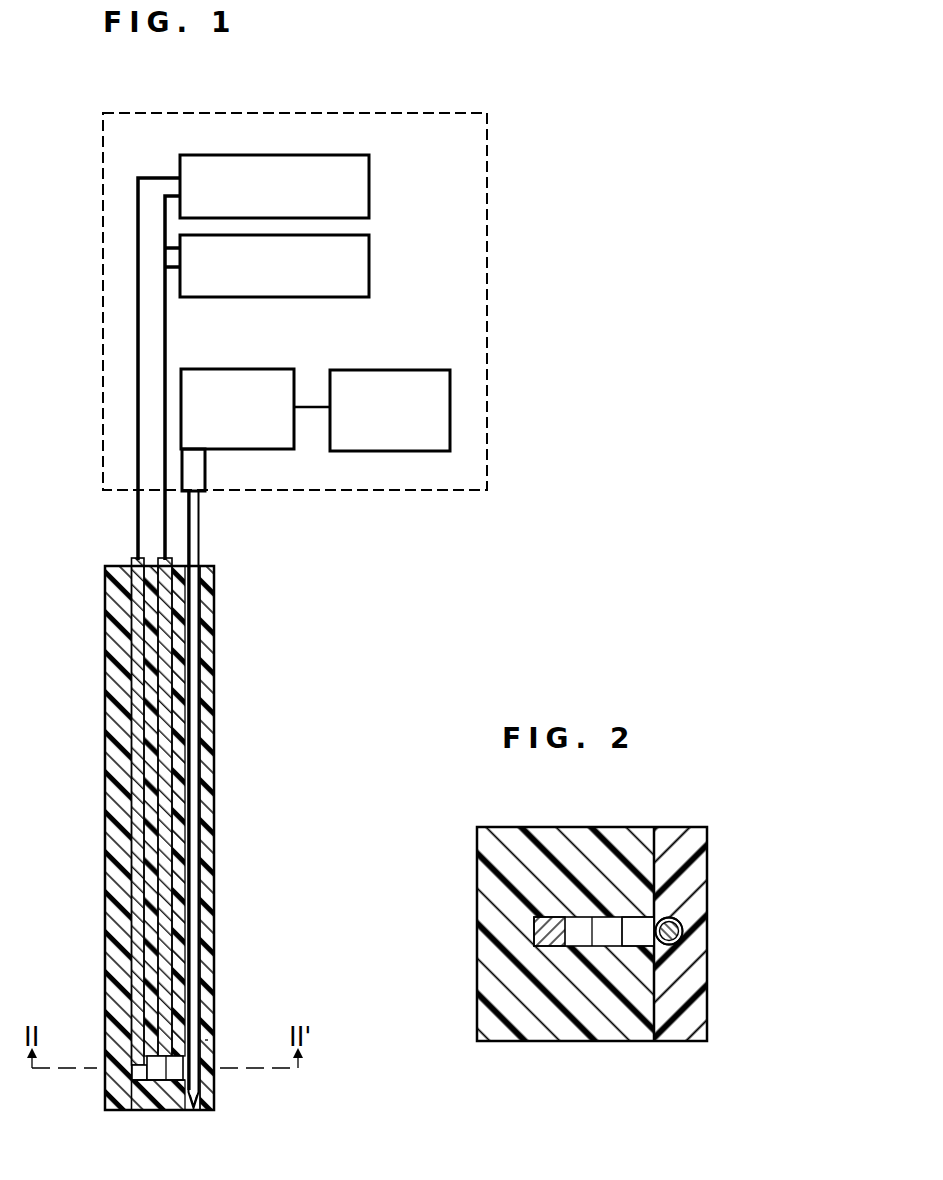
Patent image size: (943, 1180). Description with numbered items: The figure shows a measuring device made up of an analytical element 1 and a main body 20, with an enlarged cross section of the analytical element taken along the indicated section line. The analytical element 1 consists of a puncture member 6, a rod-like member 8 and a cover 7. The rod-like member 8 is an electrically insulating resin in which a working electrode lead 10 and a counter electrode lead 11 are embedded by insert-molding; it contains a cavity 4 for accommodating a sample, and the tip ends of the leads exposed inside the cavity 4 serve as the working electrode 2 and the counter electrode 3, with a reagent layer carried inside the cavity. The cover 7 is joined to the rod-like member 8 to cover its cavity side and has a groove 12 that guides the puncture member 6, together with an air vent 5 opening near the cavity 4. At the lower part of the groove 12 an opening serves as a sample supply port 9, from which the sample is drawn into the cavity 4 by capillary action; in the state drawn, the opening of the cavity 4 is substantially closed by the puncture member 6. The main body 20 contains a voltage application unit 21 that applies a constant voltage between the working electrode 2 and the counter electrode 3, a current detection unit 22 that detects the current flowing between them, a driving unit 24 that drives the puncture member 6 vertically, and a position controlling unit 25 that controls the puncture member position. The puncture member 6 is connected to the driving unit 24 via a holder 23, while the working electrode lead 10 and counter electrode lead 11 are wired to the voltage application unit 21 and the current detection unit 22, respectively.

In FIG. 1, the analytical element 1 is at (146, 826).
In FIG. 1, the working electrode 2 is at (130, 1064).
In FIG. 2, the working electrode 2 is at (552, 947).
In FIG. 1, the counter electrode 3 is at (163, 1060).
In FIG. 2, the counter electrode 3 is at (605, 945).
In FIG. 1, the cavity 4 is at (155, 1074).
In FIG. 2, the cavity 4 is at (633, 945).
In FIG. 1, the air vent 5 is at (207, 1038).
In FIG. 1, the puncture member 6 is at (200, 535).
In FIG. 2, the puncture member 6 is at (683, 934).
In FIG. 1, the cover 7 is at (213, 852).
In FIG. 2, the cover 7 is at (680, 863).
In FIG. 1, the rod-like member 8 is at (117, 852).
In FIG. 2, the rod-like member 8 is at (505, 900).
In FIG. 1, the sample supply port 9 is at (194, 1108).
In FIG. 1, the working electrode lead 10 is at (132, 592).
In FIG. 1, the counter electrode lead 11 is at (165, 645).
In FIG. 1, the groove 12 is at (212, 616).
In FIG. 2, the groove 12 is at (663, 918).
In FIG. 1, the main body 20 is at (487, 130).
In FIG. 1, the voltage application unit 21 is at (369, 167).
In FIG. 1, the current detection unit 22 is at (369, 245).
In FIG. 1, the holder 23 is at (205, 470).
In FIG. 1, the driving unit 24 is at (266, 369).
In FIG. 1, the position controlling unit 25 is at (422, 370).